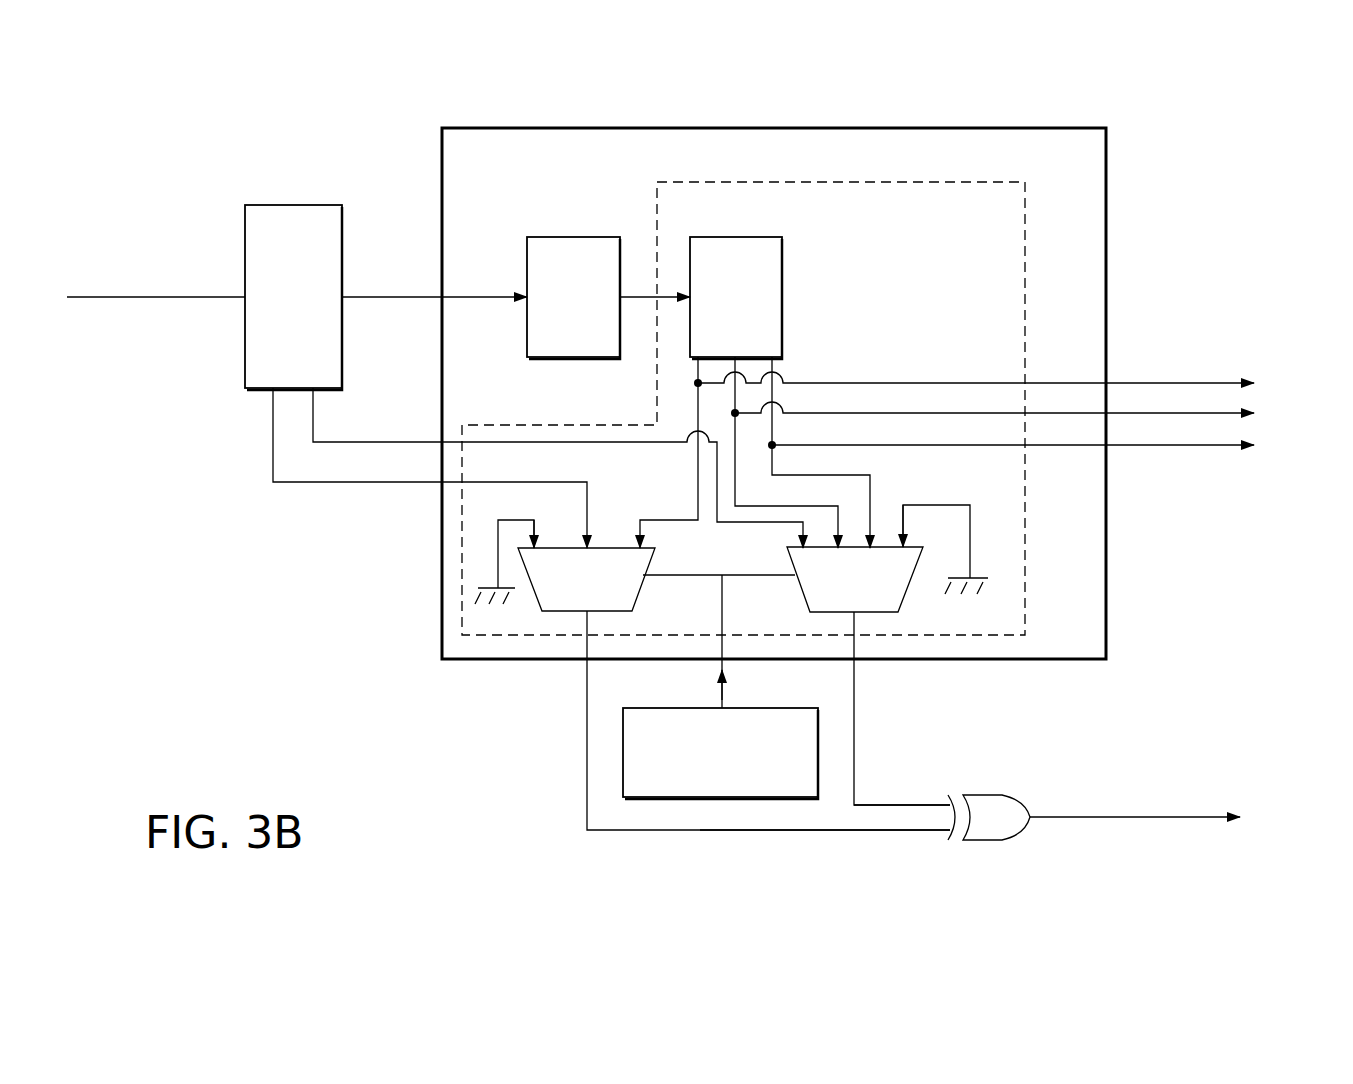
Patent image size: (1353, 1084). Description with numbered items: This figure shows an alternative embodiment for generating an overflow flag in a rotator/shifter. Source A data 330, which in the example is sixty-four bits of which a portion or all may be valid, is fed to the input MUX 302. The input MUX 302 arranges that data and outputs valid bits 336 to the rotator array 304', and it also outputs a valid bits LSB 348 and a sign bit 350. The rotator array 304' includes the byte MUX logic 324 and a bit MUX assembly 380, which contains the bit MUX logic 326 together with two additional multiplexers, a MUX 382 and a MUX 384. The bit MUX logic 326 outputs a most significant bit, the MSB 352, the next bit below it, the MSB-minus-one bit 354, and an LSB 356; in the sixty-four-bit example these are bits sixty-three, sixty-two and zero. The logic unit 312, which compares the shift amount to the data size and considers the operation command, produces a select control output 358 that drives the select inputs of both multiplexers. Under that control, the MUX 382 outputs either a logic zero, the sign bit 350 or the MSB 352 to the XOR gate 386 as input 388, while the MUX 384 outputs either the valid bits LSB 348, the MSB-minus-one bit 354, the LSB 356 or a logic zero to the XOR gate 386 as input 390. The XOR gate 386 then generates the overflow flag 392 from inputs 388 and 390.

The rotator array 304' is at (805, 373).
The bit MUX assembly 380 is at (995, 183).
The input multiplexer (MUX) 302 is at (290, 205).
The source A data 330 is at (205, 297).
The valid bits 336 is at (383, 300).
The byte MUX logic 324 is at (572, 237).
The bit MUX logic 326 is at (707, 237).
The most significant bit (MSB) 352 is at (1212, 375).
The MSB-1 354 is at (1230, 410).
The LSB 356 is at (1214, 449).
The valid bits LSB 348 is at (400, 450).
The sign bit 350 is at (273, 470).
The MUX 382 is at (608, 548).
The MUX 384 is at (783, 555).
The select control output 358 is at (722, 603).
The logic unit 312 is at (685, 708).
The XOR gate 386 is at (1000, 795).
The input 390 is at (904, 805).
The input 388 is at (912, 830).
The overflow flag 392 is at (1130, 817).